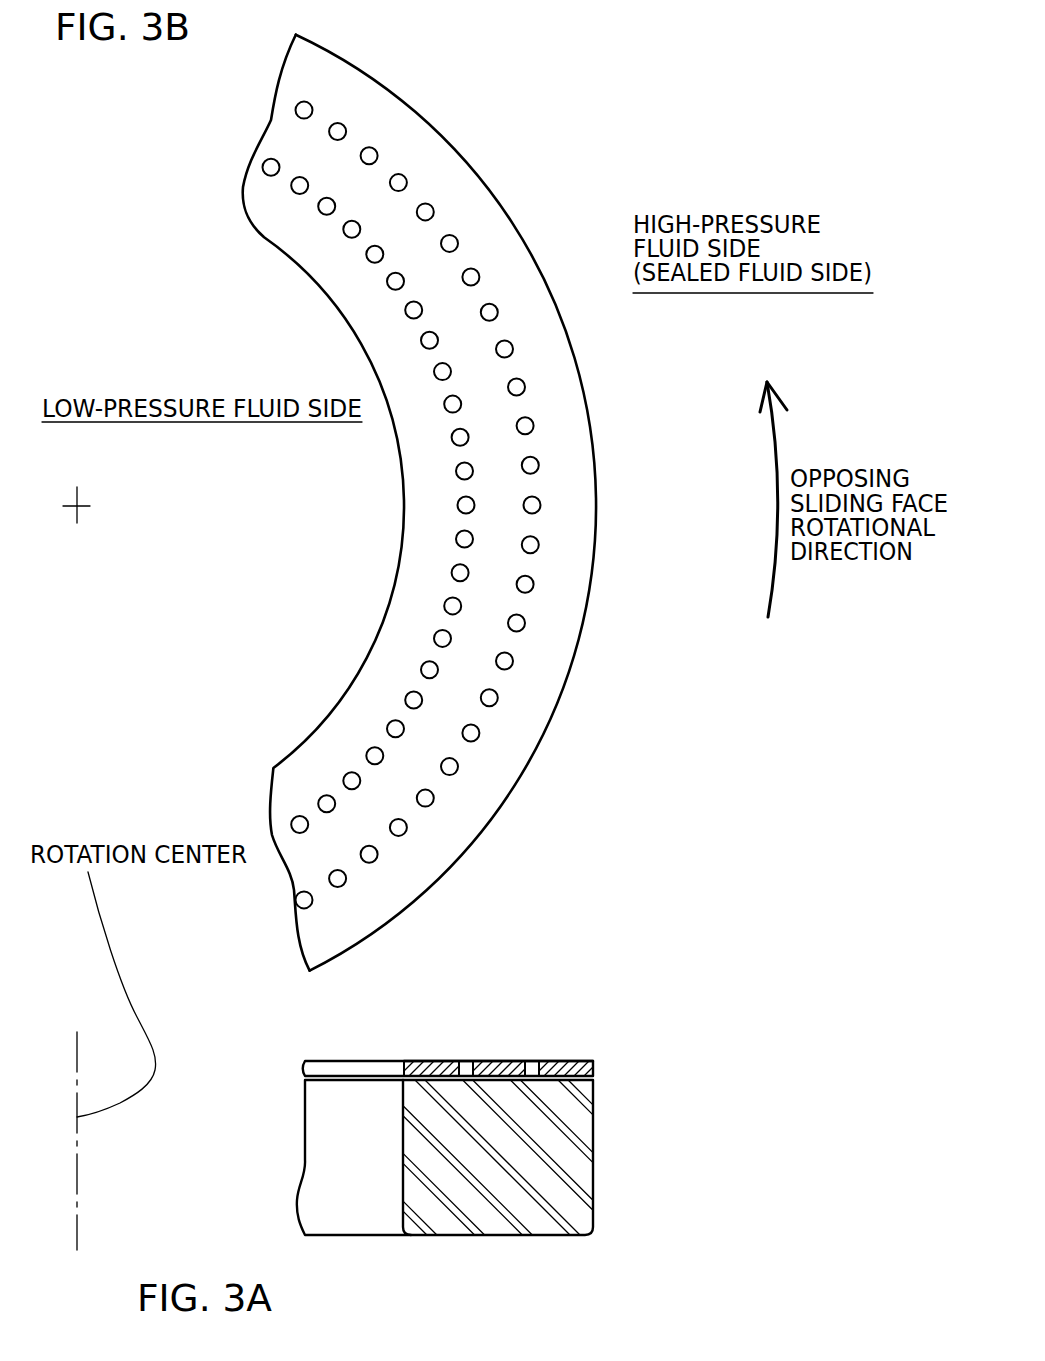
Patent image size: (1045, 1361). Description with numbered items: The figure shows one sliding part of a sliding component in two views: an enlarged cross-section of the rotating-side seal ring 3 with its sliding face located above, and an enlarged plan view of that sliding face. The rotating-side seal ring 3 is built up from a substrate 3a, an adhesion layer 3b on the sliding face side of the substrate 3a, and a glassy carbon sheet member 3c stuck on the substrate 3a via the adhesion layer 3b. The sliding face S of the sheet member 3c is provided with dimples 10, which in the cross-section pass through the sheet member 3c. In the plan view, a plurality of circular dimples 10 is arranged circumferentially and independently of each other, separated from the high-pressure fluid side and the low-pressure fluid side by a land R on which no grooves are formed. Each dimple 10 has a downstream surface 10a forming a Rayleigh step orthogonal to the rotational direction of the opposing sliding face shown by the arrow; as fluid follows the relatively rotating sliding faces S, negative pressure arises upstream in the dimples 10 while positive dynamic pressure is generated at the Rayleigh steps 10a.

In FIG. 3B, the rotating-side seal ring 3 is at (593, 408).
In FIG. 3A, the rotating-side seal ring 3 is at (588, 1055).
In FIG. 3A, the substrate 3a is at (490, 1217).
In FIG. 3A, the adhesion layer 3b is at (595, 1073).
In FIG. 3B, the glassy carbon sheet member 3c is at (578, 500).
In FIG. 3A, the glassy carbon sheet member 3c is at (495, 1061).
In FIG. 3B, the dimples 10 is at (452, 607).
In FIG. 3A, the dimples 10 is at (463, 1061).
In FIG. 3B, the downstream surface 10a is at (452, 607).
In FIG. 3B, the sliding face S is at (546, 582).
In FIG. 3A, the sliding face S is at (425, 1061).
In FIG. 3B, the land R is at (560, 457).